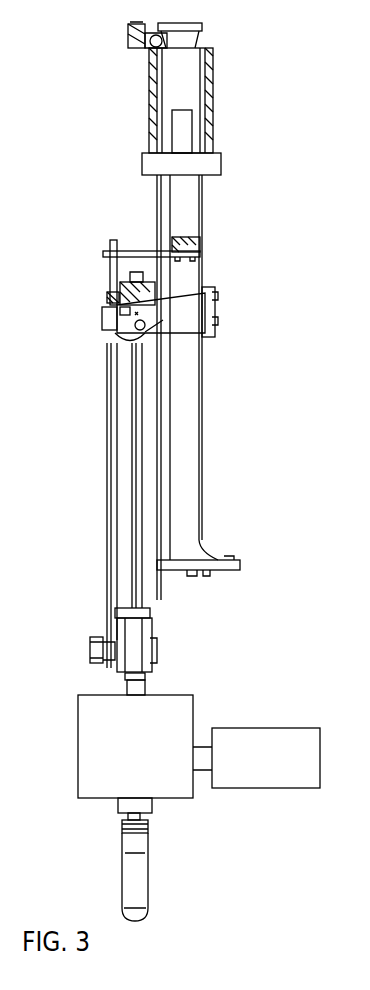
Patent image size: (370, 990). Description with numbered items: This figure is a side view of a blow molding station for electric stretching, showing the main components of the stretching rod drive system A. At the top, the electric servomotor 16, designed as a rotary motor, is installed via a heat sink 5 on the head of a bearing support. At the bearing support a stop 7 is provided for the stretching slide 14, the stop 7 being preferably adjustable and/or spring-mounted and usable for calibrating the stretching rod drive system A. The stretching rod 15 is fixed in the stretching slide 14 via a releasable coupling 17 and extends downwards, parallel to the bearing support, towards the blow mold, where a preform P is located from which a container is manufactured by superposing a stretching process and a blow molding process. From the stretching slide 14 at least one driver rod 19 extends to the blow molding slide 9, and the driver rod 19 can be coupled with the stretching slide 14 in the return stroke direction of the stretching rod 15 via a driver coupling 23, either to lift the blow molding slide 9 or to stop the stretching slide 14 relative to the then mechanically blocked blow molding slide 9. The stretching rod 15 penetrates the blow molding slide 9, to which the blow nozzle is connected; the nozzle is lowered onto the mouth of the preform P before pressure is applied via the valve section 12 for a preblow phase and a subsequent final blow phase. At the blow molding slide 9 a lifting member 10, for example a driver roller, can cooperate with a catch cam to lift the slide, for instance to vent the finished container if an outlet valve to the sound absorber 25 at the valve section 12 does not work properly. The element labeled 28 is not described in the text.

The stretching rod drive system A is at (52, 227).
The electric servomotor 16 is at (188, 61).
The heat sink 5 is at (214, 163).
The stop 7 is at (202, 249).
The stretching slide 14 is at (105, 332).
The releasable coupling 17 is at (107, 292).
The driver coupling 23 is at (107, 299).
The stretching rod 15 is at (132, 396).
The driver rod 19 is at (108, 432).
The blow molding slide 9 is at (102, 633).
The lifting member 10 is at (88, 648).
The valve section 12 is at (78, 710).
The sound absorber 25 is at (301, 728).
The nozzle 28 is at (110, 868).
The preform P is at (143, 888).